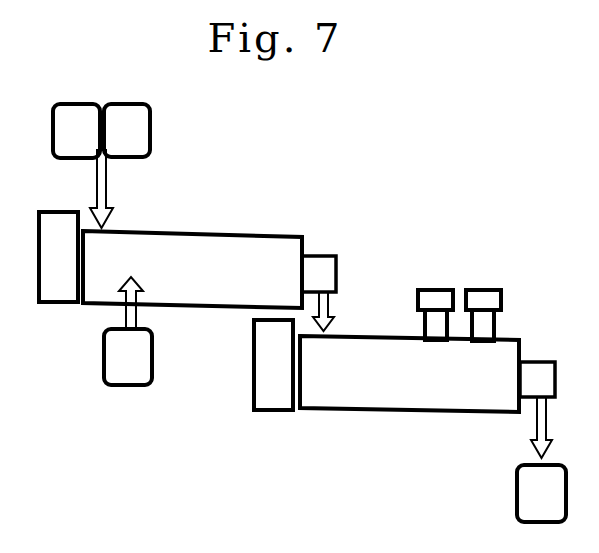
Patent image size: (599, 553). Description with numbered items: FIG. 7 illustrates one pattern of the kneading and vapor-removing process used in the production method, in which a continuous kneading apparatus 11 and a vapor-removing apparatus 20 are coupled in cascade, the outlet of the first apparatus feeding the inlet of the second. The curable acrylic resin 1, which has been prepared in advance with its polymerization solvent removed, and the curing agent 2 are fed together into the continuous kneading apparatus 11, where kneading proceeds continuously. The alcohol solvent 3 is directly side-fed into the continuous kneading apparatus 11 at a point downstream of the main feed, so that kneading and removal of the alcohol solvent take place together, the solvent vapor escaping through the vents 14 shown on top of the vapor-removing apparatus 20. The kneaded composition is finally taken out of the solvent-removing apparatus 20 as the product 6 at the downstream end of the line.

The curable acrylic resin 1 is at (76, 131).
The curing agent 2 is at (127, 130).
The alcohol solvent 3 is at (128, 357).
The product 6 is at (541, 493).
The continuous kneading apparatus 11 is at (210, 312).
The vents 14 is at (481, 283).
The vapor-removing apparatus 20 is at (378, 415).